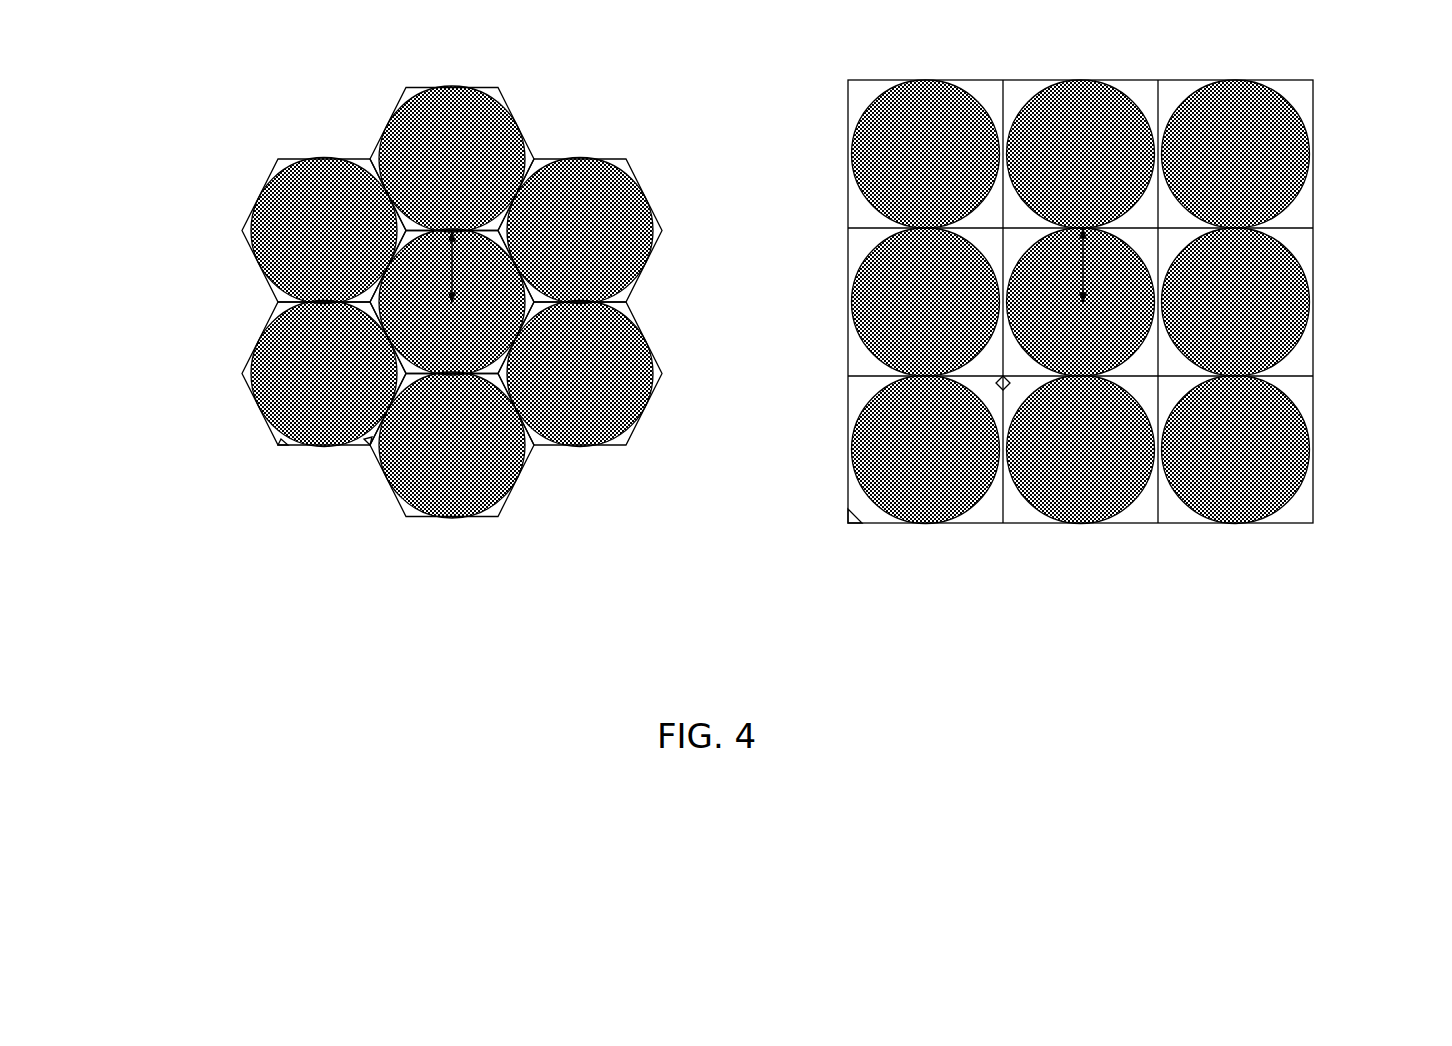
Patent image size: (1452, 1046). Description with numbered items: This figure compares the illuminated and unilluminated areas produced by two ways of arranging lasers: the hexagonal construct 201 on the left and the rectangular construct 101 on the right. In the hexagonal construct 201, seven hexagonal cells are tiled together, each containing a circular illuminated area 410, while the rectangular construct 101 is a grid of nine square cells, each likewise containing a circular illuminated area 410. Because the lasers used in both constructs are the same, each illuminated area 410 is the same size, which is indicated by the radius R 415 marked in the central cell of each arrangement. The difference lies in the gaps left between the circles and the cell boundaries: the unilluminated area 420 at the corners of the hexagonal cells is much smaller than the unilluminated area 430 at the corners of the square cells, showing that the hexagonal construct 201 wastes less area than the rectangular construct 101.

The hexagonal construct 201 is at (400, 97).
The rectangular construct 101 is at (1122, 80).
The illuminated area 410 is at (277, 360).
The radius R 415 is at (794, 265).
The unilluminated area 420 is at (372, 447).
The unilluminated area 430 is at (1015, 393).